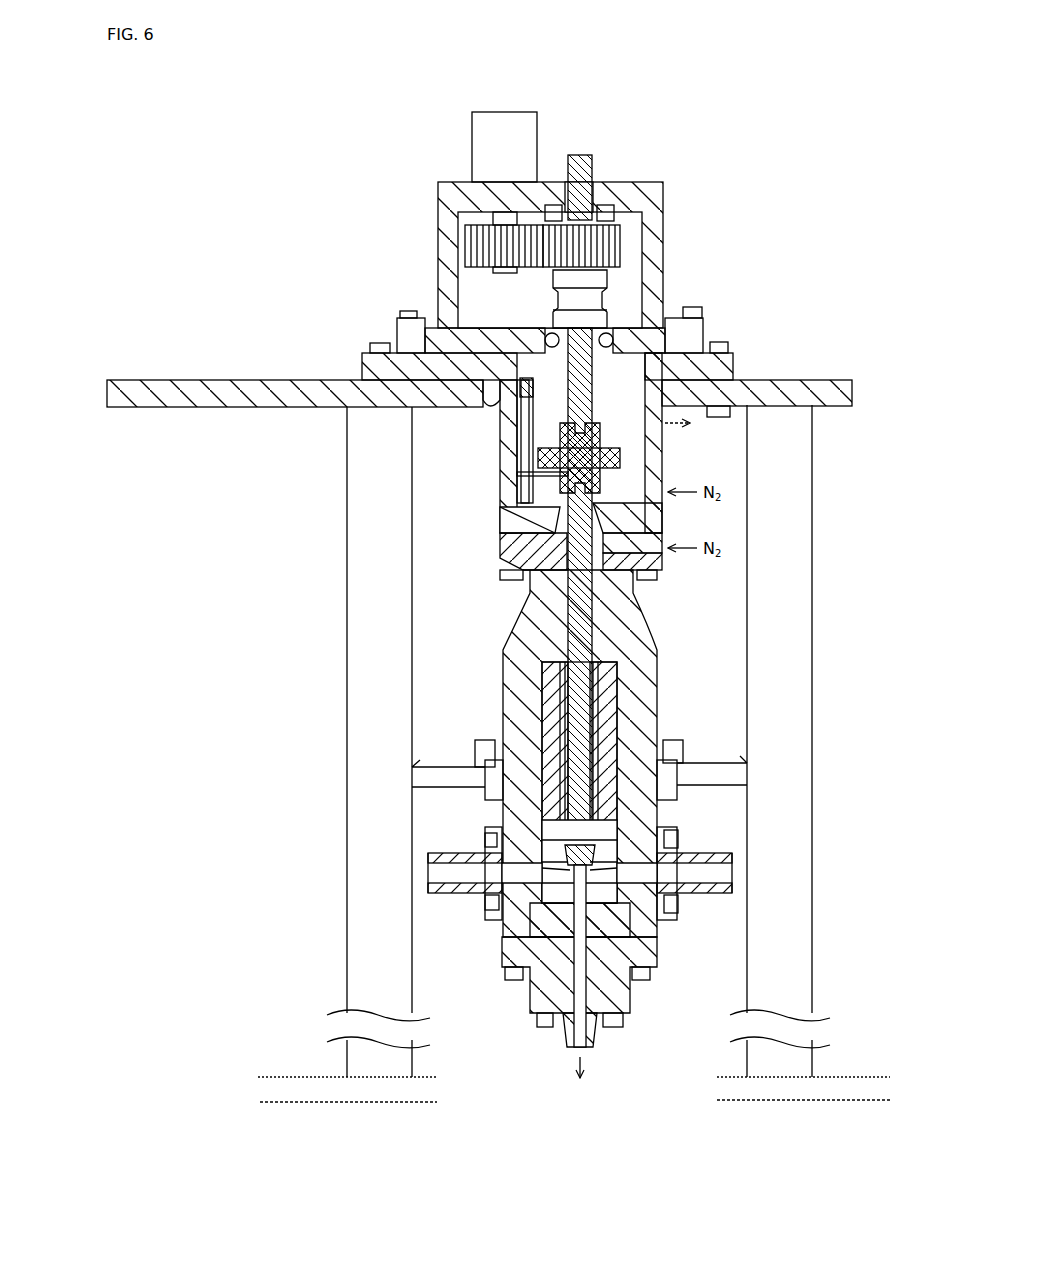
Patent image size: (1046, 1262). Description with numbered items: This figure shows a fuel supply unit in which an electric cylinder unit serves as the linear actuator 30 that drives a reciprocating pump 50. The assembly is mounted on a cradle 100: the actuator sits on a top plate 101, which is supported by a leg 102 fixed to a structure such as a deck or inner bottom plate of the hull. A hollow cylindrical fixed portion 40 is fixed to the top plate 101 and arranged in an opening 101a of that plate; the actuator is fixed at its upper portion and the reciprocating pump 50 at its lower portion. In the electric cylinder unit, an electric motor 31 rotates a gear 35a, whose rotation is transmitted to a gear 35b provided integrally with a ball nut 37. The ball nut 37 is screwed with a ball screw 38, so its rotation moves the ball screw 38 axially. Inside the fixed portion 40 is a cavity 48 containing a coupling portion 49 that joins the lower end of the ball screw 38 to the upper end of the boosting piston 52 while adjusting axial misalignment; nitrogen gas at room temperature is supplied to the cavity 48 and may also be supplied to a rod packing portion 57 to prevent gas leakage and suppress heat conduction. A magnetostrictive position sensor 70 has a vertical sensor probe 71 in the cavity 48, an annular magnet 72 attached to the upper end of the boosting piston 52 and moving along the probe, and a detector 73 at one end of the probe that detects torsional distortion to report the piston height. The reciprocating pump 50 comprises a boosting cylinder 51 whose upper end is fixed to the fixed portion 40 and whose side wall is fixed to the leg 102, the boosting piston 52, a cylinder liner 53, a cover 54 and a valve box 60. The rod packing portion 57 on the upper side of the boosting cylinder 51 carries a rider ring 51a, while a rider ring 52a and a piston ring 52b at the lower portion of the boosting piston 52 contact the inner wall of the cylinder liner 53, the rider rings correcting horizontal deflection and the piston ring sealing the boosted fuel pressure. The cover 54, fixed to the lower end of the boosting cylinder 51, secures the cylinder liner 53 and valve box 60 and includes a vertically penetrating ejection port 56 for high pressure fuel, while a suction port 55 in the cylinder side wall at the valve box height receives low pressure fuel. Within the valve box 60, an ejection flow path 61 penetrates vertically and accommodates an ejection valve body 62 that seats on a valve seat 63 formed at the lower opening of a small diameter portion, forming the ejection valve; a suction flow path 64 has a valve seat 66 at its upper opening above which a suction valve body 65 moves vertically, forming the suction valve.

The linear actuator 30 is at (651, 142).
The electric motor 31 is at (485, 132).
The gear 35a is at (470, 245).
The gear 35b is at (606, 240).
The ball nut 37 is at (612, 300).
The ball screw 38 is at (594, 159).
The fixed portion 40 is at (500, 516).
The cavity 48 is at (637, 463).
The coupling portion 49 is at (662, 433).
The reciprocating pump 50 is at (572, 703).
The boosting cylinder 51 is at (505, 677).
The rider ring 51a is at (540, 540).
The boosting piston 52 is at (580, 707).
The rider ring 52a is at (548, 707).
The piston ring 52b is at (548, 733).
The cylinder liner 53 is at (607, 733).
The cover 54 is at (657, 957).
The suction port 55 is at (523, 870).
The ejection port 56 is at (600, 1030).
The rod packing portion 57 is at (515, 576).
The valve box 60 is at (572, 875).
The ejection flow path 61 is at (673, 827).
The ejection valve body 62 is at (662, 913).
The valve seat 63 is at (633, 875).
The suction flow path 64 is at (493, 840).
The suction valve body 65 is at (540, 830).
The valve seat 66 is at (497, 827).
The magnetostrictive position sensor 70 is at (285, 408).
The sensor probe 71 is at (517, 469).
The annular magnet 72 is at (517, 500).
The detector 73 is at (520, 388).
The cradle 100 is at (858, 353).
The top plate 101 is at (770, 387).
The opening 101a is at (489, 408).
The leg 102 is at (780, 430).